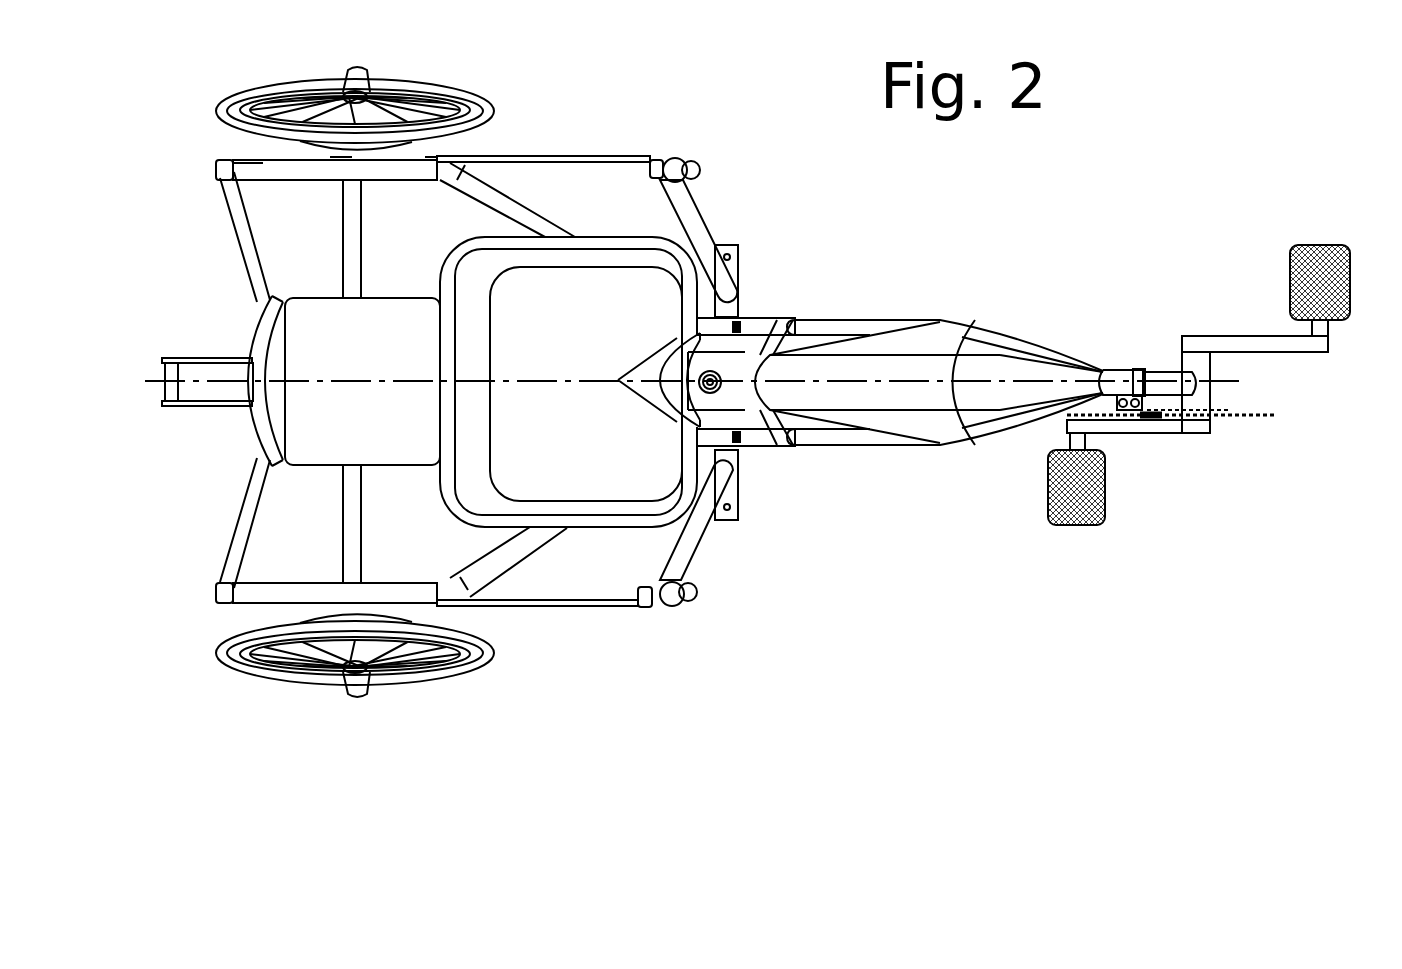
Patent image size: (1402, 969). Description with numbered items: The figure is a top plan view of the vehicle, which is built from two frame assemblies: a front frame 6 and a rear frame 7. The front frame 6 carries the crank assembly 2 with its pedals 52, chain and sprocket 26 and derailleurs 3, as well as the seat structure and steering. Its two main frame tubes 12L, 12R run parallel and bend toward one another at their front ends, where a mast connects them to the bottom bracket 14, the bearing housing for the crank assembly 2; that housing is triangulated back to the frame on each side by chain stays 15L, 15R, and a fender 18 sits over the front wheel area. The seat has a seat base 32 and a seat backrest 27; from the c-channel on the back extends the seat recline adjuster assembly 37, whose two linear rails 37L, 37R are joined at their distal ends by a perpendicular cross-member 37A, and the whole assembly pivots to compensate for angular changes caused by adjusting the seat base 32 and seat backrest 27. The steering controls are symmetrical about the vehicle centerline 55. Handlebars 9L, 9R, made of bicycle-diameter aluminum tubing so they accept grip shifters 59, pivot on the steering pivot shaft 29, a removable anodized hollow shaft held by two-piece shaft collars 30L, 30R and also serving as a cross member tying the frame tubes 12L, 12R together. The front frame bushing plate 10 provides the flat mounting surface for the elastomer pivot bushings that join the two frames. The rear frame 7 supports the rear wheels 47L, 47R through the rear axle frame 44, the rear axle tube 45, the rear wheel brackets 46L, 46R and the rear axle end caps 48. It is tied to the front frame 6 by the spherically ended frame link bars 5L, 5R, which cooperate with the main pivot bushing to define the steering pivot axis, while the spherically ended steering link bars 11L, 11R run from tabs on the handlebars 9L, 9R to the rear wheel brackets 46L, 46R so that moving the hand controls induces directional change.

The crank assembly 2 is at (1330, 345).
The derailleurs 3 is at (1140, 393).
The spherically ended link bar (frame) 5L is at (244, 248).
The spherically ended link bar (frame) 5R is at (242, 508).
The front frame 6 is at (928, 352).
The rear frame 7 is at (505, 190).
The steering handlebar 9L is at (700, 208).
The steering handlebar 9R is at (705, 533).
The front frame bushing plate 10 is at (758, 447).
The spherically ended link bar (steering) 11L is at (597, 154).
The spherically ended link bar (steering) 11R is at (610, 607).
The frame tube 12L is at (842, 326).
The frame tube 12R is at (845, 448).
The bottom bracket 14 is at (1208, 377).
The chain stay 15L is at (1070, 358).
The chain stay 15R is at (1033, 425).
The fender 18 is at (940, 402).
The chain and sprocket 26 is at (1277, 415).
The seat backrest 27 is at (394, 318).
The steering pivot shaft 29 is at (730, 248).
The shaft collar 30L is at (755, 328).
The shaft collar 30R is at (750, 450).
The seat base 32 is at (537, 372).
The seat recline adjuster assembly 37 is at (170, 358).
The cross-member 37A is at (165, 401).
The linear rail 37L is at (218, 358).
The linear rail 37R is at (236, 406).
The rear axle frame 44 is at (518, 548).
The rear axle tube 45 is at (352, 537).
The rear wheel bracket 46L is at (232, 160).
The rear wheel bracket 46R is at (233, 603).
The rear wheel 47L is at (487, 92).
The rear wheel 47R is at (487, 650).
The rear axle end cap 48 is at (238, 182).
The pedals 52 is at (1320, 245).
The vehicle centerline 55 is at (143, 378).
The gear shifter and grips 59 is at (686, 160).